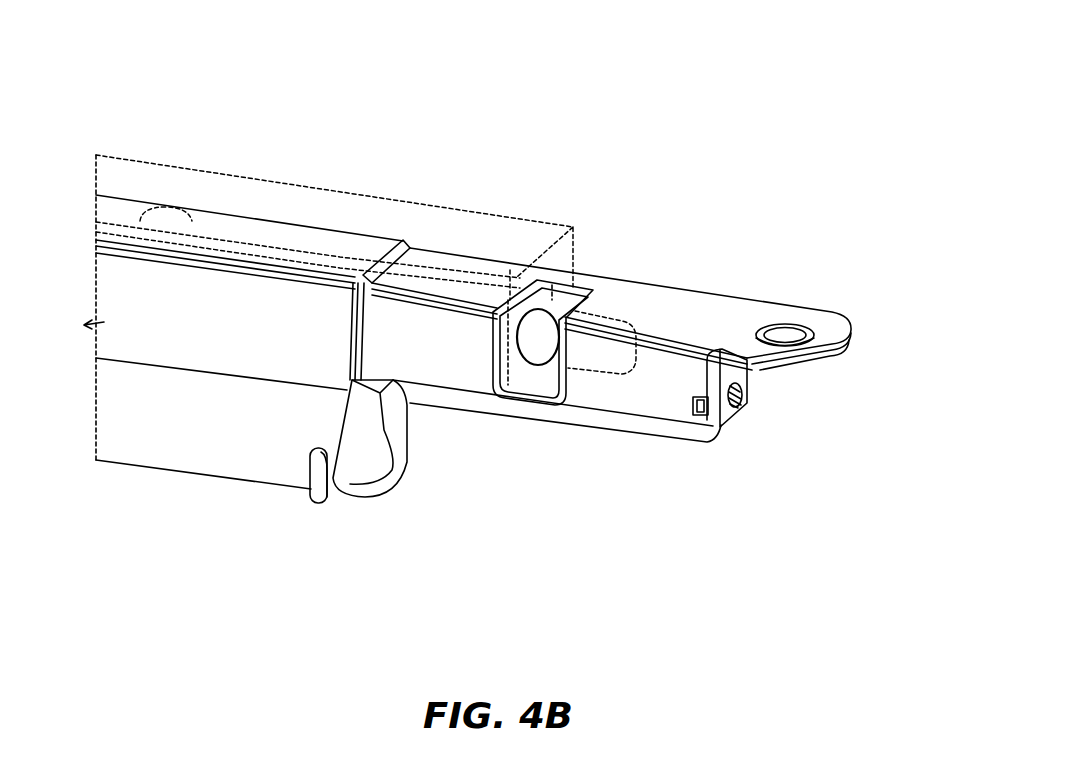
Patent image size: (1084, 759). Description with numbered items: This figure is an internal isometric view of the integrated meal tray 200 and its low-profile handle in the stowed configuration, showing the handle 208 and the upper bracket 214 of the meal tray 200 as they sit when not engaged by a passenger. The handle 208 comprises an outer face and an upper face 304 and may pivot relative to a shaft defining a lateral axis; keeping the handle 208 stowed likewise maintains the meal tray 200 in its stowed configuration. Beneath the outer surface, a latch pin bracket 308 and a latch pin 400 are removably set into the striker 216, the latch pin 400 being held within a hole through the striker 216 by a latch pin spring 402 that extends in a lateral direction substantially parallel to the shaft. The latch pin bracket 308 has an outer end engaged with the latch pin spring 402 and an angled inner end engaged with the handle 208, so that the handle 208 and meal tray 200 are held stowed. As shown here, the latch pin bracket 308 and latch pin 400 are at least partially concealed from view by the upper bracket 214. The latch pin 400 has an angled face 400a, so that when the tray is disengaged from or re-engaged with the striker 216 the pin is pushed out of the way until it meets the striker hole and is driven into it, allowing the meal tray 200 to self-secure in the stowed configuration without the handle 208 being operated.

The meal tray 200 is at (162, 90).
The handle 208 is at (182, 233).
The upper bracket 214 is at (740, 317).
The striker 216 is at (415, 227).
The upper face 304 is at (297, 240).
The latch pin bracket 308 is at (572, 420).
The latch pin 400 is at (600, 345).
The angled face 400a is at (538, 333).
The latch pin spring 402 is at (745, 405).